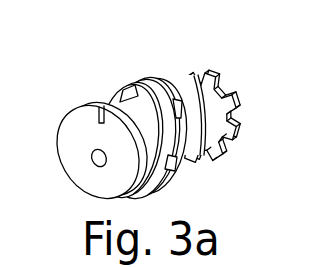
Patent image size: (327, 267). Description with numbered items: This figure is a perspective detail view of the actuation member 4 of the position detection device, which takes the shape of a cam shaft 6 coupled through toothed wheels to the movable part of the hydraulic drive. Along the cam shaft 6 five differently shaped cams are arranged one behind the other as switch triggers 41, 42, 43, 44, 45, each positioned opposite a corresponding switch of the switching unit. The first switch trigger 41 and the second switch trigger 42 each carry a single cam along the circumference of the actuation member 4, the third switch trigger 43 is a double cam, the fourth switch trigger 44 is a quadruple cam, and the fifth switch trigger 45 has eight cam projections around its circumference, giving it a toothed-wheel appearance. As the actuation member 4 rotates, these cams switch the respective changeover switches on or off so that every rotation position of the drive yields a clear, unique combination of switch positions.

The actuation member 4 is at (205, 65).
The cam shaft 6 is at (92, 180).
The first switch trigger 41 is at (81, 113).
The second switch trigger 42 is at (128, 110).
The third switch trigger 43 is at (178, 172).
The fourth switch trigger 44 is at (213, 148).
The fifth switch trigger 45 is at (238, 106).